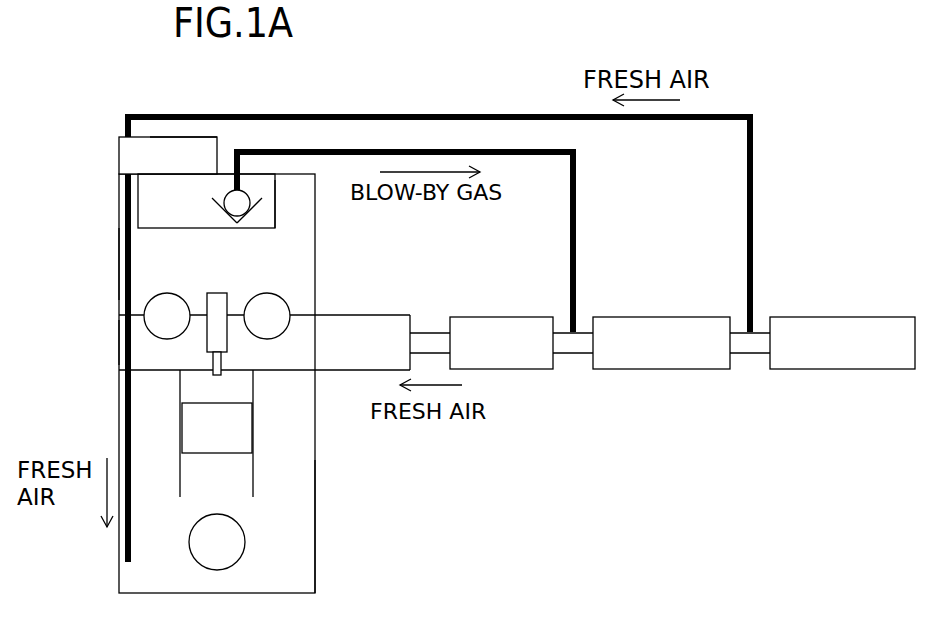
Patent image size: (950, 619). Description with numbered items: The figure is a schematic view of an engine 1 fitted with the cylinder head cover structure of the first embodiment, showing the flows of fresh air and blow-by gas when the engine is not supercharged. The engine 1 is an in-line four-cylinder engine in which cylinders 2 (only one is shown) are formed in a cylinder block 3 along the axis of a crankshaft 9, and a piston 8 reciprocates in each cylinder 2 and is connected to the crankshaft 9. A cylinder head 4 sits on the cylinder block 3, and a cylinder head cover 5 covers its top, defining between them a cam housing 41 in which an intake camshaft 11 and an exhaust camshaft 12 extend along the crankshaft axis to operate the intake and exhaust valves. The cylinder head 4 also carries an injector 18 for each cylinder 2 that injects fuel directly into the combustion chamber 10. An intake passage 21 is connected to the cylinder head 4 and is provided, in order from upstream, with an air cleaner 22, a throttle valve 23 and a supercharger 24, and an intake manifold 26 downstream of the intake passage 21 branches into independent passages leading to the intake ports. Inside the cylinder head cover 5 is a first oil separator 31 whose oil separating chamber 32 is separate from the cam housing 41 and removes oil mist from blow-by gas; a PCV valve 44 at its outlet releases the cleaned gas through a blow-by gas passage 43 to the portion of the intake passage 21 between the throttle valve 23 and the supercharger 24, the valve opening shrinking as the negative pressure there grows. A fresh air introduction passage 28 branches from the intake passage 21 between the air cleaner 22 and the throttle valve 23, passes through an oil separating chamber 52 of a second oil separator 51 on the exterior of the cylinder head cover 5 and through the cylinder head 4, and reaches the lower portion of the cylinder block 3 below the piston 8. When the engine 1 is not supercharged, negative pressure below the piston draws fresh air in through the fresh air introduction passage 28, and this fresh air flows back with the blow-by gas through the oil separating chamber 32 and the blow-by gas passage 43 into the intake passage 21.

The engine 1 is at (322, 240).
The cylinder 2 is at (183, 384).
The cylinder block 3 is at (315, 497).
The cylinder head 4 is at (118, 345).
The cylinder head cover 5 is at (118, 262).
The piston 8 is at (236, 430).
The crankshaft 9 is at (245, 542).
The combustion chamber 10 is at (240, 387).
The intake camshaft 11 is at (267, 294).
The exhaust camshaft 12 is at (170, 294).
The injector 18 is at (217, 293).
The intake passage 21 is at (572, 356).
The air cleaner 22 is at (843, 371).
The throttle valve 23 is at (663, 370).
The supercharger 24 is at (516, 370).
The intake manifold 26 is at (390, 313).
The fresh air introduction passage 28 is at (460, 113).
The first oil separator 31 is at (278, 202).
The oil separating chamber 32 is at (155, 205).
The cam housing 41 is at (297, 272).
The blow-by gas passage 43 is at (393, 148).
The PCV valve 44 is at (240, 190).
The second oil separator 51 is at (200, 132).
The oil separating chamber 52 is at (153, 150).